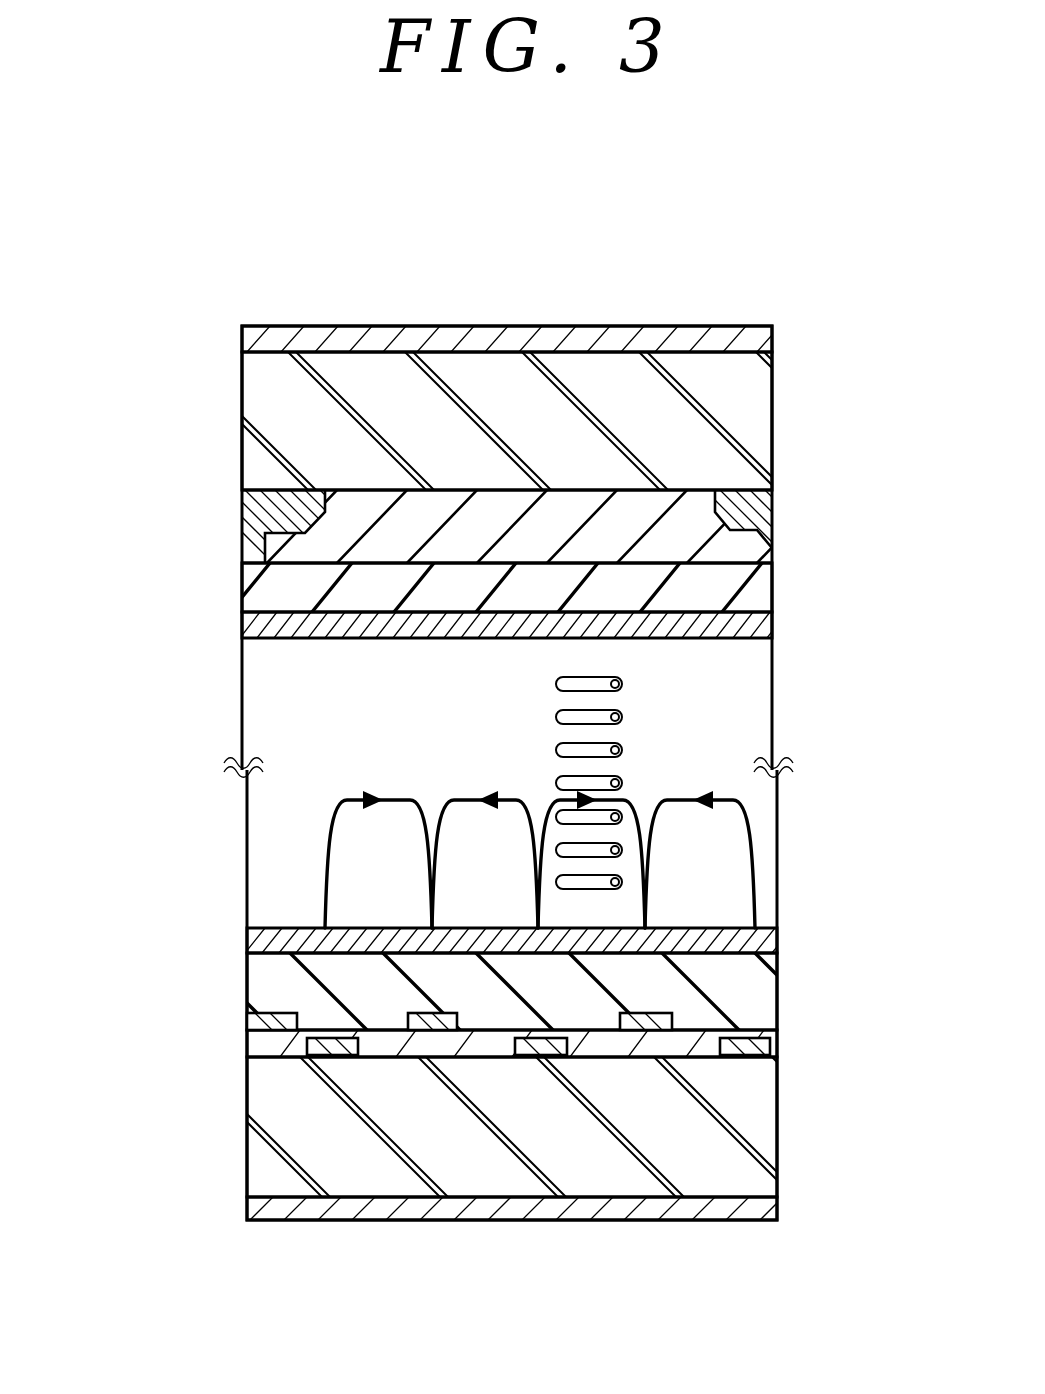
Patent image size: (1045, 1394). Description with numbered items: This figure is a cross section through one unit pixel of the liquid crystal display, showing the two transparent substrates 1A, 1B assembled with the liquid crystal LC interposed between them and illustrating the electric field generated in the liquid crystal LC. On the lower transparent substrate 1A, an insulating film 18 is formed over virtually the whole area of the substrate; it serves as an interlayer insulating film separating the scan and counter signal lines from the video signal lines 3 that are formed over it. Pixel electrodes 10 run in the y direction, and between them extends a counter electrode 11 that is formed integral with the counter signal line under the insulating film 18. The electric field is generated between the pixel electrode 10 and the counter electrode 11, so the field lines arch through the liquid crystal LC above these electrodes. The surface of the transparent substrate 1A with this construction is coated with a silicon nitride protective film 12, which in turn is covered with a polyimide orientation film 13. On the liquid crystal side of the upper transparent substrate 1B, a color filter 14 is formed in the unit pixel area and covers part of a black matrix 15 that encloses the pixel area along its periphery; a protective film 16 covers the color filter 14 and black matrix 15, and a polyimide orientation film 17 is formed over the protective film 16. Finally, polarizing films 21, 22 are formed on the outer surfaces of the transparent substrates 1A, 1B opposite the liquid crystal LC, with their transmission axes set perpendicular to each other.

The polarizing film 22 is at (655, 334).
The transparent substrate 1B is at (265, 400).
The color filter 14 is at (384, 502).
The black matrix 15 is at (258, 514).
The protective film 16 is at (762, 587).
The orientation film 17 is at (773, 627).
The liquid crystal LC is at (630, 718).
The orientation film 13 is at (780, 937).
The protective film 12 is at (767, 988).
The video signal line 3 is at (246, 1026).
The pixel electrode 10 is at (431, 1030).
The counter electrode 11 is at (300, 1040).
The insulating film 18 is at (778, 1032).
The transparent substrate 1A is at (284, 1117).
The polarizing film 21 is at (775, 1198).